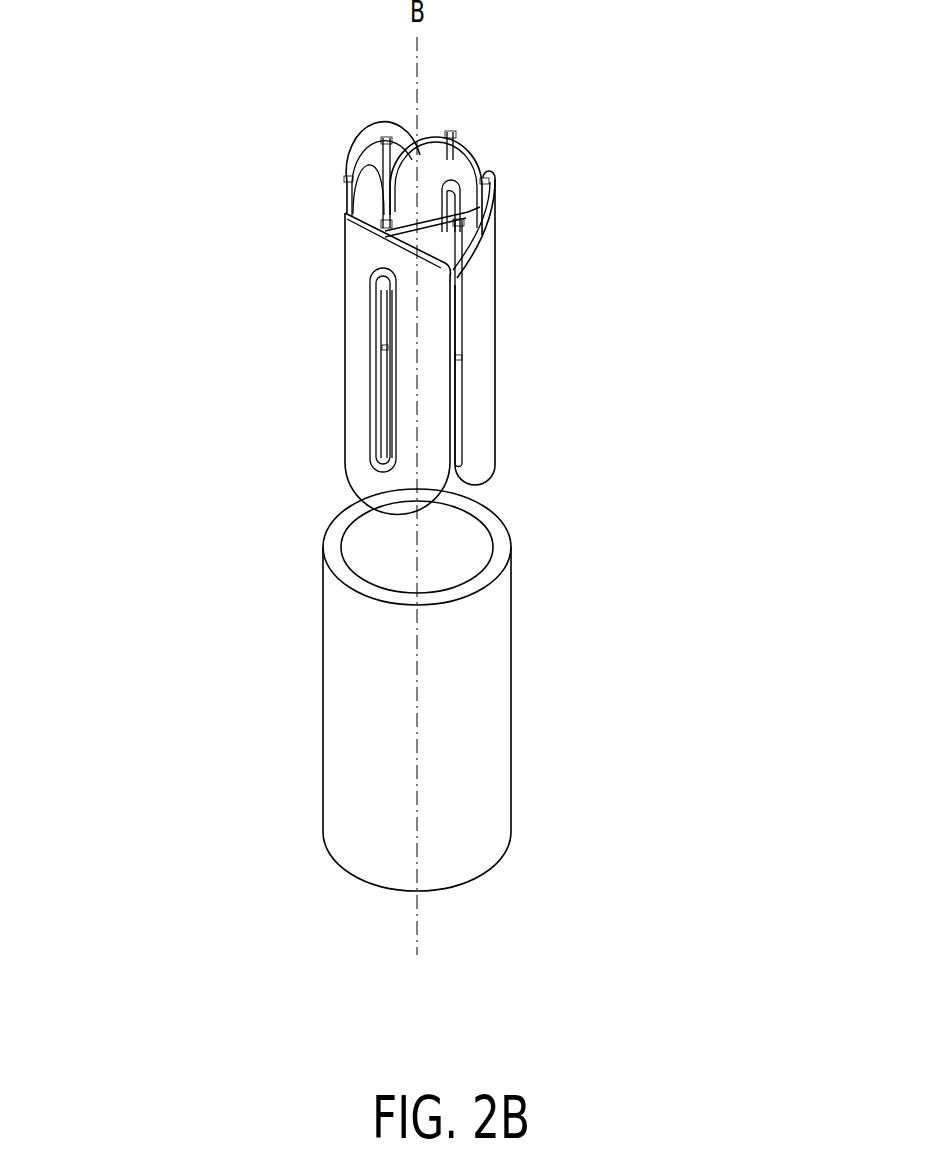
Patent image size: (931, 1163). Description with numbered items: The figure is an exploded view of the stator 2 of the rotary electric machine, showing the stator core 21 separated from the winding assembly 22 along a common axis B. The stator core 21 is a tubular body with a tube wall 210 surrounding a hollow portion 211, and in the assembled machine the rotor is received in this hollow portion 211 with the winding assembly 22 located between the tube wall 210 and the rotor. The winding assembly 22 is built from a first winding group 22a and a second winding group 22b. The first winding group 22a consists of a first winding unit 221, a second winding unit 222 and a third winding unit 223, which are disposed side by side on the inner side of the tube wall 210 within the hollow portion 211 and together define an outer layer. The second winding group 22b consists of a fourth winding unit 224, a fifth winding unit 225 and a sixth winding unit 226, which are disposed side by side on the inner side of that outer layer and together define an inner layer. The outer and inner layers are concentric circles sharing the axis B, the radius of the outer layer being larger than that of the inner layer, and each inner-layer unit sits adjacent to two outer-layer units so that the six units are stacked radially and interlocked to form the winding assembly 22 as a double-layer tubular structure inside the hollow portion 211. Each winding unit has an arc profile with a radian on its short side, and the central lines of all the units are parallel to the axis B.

The stator 2 is at (729, 54).
The stator core 21 is at (373, 687).
The tube wall 210 is at (365, 540).
The hollow portion 211 is at (483, 523).
The winding assembly 22 is at (275, 363).
The first winding group 22a is at (512, 275).
The second winding group 22b is at (447, 127).
The first winding unit 221 is at (474, 333).
The second winding unit 222 is at (358, 262).
The third winding unit 223 is at (378, 133).
The fourth winding unit 224 is at (349, 178).
The fifth winding unit 225 is at (470, 140).
The sixth winding unit 226 is at (487, 205).